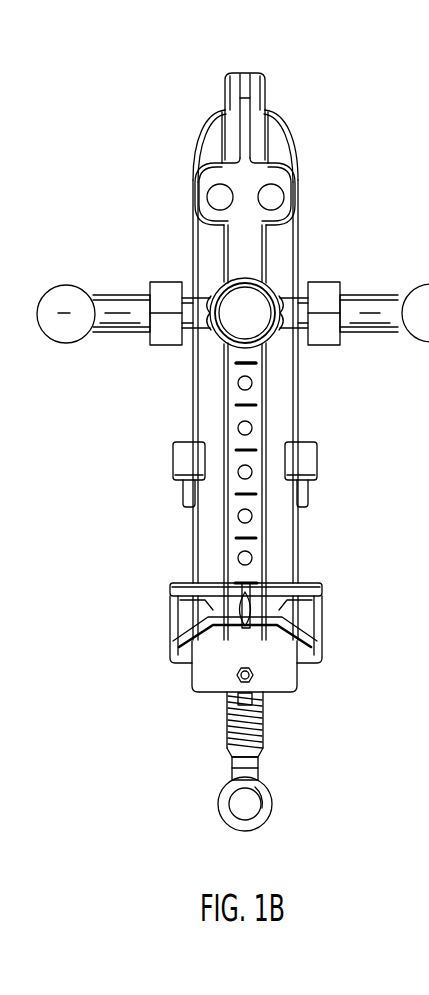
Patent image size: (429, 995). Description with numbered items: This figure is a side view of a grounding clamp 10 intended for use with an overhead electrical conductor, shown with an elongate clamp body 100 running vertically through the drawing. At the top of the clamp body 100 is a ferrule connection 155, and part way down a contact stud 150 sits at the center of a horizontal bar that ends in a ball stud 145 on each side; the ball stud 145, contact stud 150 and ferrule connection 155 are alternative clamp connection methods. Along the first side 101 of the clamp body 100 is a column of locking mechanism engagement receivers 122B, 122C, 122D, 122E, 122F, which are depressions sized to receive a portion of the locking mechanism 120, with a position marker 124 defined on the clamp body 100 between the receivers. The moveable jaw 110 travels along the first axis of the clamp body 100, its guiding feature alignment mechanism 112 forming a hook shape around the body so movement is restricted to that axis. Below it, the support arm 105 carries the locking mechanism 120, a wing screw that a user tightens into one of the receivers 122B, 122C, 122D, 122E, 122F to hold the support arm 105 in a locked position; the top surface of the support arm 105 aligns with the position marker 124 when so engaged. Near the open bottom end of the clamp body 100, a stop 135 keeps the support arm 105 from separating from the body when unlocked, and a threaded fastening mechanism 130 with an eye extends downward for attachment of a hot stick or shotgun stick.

The grounding clamp 10 is at (258, 31).
The clamp body 100 is at (197, 535).
The first side 101 is at (283, 560).
The support arm 105 is at (178, 618).
The moveable jaw 110 is at (173, 463).
The guiding feature alignment mechanism 112 is at (307, 468).
The locking mechanism 120 is at (245, 598).
The locking mechanism engagement receiver 122B is at (252, 558).
The locking mechanism engagement receiver 122C is at (252, 516).
The locking mechanism engagement receiver 122D is at (252, 471).
The locking mechanism engagement receiver 122E is at (252, 426).
The locking mechanism engagement receiver 122F is at (252, 382).
The position marker 124 is at (238, 362).
The fastening mechanism 130 is at (205, 798).
The stop 135 is at (236, 681).
The ball stud 145 is at (155, 348).
The contact stud 150 is at (242, 308).
The ferrule connection 155 is at (193, 183).